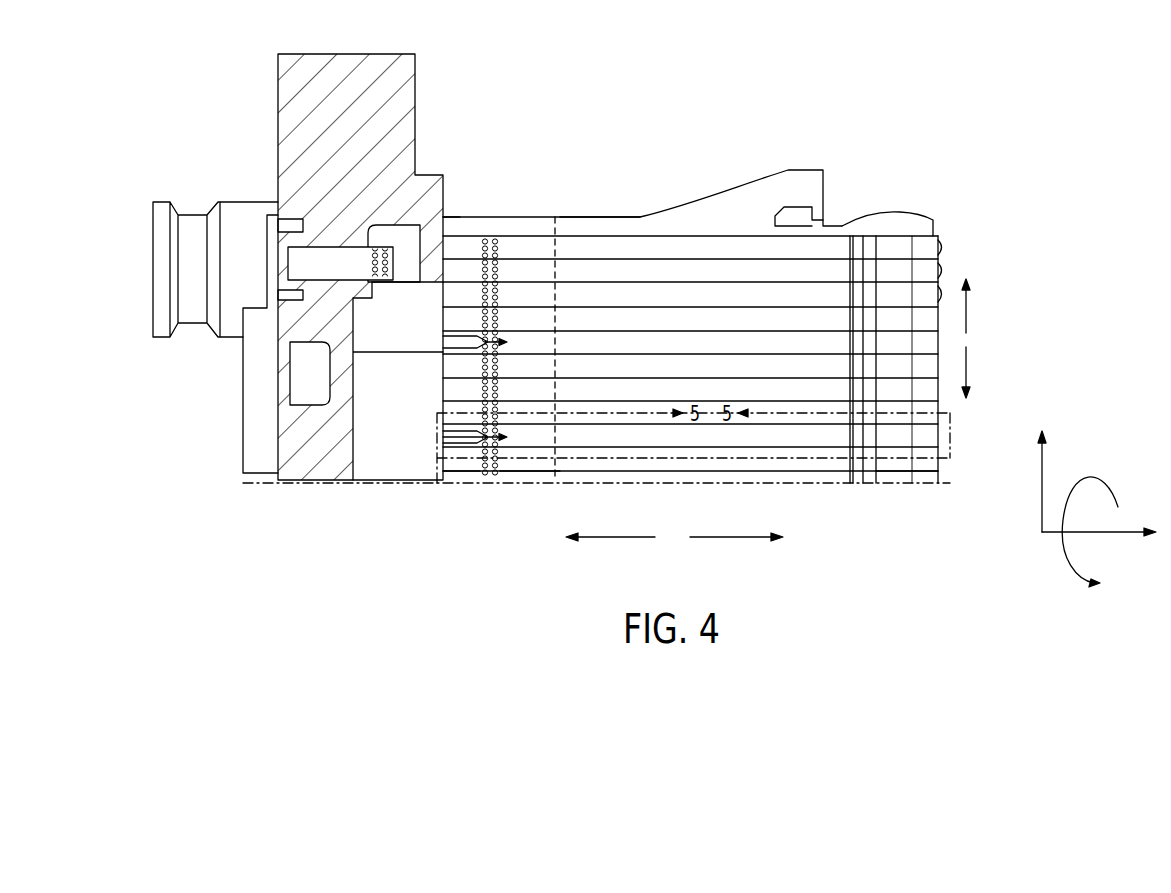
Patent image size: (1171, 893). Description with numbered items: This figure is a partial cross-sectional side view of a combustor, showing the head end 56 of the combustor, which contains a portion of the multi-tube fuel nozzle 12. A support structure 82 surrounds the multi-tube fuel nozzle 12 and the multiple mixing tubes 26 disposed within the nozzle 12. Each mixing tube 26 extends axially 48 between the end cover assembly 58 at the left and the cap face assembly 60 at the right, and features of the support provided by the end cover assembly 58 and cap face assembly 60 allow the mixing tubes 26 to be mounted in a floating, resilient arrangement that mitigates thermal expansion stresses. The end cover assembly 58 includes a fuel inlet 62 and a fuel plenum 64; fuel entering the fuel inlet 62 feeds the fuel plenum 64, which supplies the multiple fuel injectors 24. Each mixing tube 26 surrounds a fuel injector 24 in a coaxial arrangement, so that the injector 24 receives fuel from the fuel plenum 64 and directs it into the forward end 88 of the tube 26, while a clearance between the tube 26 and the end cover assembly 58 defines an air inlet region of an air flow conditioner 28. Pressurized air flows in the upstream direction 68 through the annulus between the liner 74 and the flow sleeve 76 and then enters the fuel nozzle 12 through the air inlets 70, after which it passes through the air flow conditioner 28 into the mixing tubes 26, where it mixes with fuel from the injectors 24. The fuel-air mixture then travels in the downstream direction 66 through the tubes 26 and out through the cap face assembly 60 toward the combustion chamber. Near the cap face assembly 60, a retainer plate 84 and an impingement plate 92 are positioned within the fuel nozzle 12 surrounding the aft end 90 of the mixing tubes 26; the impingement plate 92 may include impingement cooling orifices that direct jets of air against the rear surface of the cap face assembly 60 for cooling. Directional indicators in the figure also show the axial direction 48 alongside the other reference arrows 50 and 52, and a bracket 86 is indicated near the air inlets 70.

The multi-tube fuel nozzle 12 is at (852, 513).
The fuel injector 24 is at (460, 440).
The mixing tube 26 is at (522, 467).
The air flow conditioner 28 is at (497, 247).
The axial direction 48 is at (1095, 533).
The radial axis 50 is at (1042, 487).
The rotational direction 52 is at (1062, 552).
The head end 56 is at (812, 83).
The end cover assembly 58 is at (417, 113).
The cap face assembly 60 is at (895, 273).
The fuel inlet 62 is at (163, 261).
The fuel plenum 64 is at (397, 465).
The downstream direction 66 is at (723, 537).
The upstream direction 68 is at (615, 537).
The air inlet 70 is at (690, 218).
The liner 74 is at (967, 378).
The flow sleeve 76 is at (967, 302).
The support structure 82 is at (617, 215).
The retainer plate 84 is at (857, 247).
The cover flange 86 is at (793, 164).
The forward end 88 is at (473, 462).
The aft end 90 is at (895, 463).
The impingement plate 92 is at (872, 246).